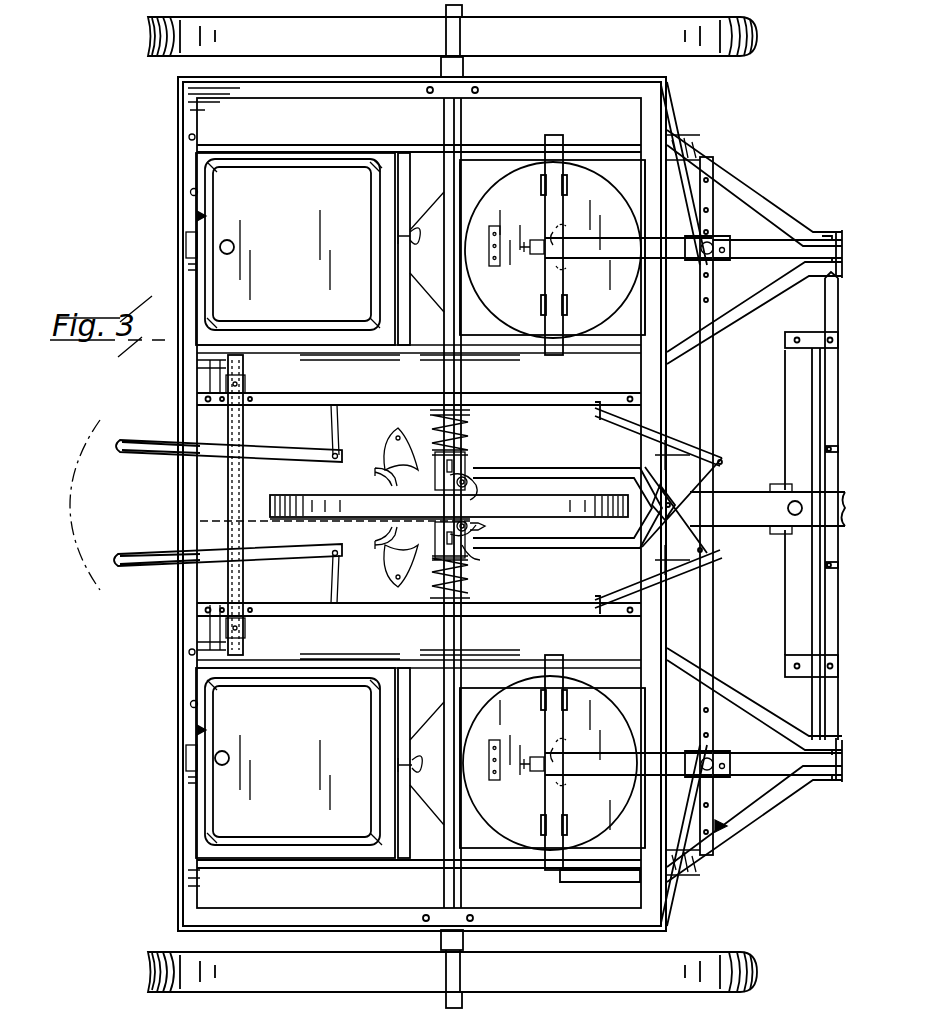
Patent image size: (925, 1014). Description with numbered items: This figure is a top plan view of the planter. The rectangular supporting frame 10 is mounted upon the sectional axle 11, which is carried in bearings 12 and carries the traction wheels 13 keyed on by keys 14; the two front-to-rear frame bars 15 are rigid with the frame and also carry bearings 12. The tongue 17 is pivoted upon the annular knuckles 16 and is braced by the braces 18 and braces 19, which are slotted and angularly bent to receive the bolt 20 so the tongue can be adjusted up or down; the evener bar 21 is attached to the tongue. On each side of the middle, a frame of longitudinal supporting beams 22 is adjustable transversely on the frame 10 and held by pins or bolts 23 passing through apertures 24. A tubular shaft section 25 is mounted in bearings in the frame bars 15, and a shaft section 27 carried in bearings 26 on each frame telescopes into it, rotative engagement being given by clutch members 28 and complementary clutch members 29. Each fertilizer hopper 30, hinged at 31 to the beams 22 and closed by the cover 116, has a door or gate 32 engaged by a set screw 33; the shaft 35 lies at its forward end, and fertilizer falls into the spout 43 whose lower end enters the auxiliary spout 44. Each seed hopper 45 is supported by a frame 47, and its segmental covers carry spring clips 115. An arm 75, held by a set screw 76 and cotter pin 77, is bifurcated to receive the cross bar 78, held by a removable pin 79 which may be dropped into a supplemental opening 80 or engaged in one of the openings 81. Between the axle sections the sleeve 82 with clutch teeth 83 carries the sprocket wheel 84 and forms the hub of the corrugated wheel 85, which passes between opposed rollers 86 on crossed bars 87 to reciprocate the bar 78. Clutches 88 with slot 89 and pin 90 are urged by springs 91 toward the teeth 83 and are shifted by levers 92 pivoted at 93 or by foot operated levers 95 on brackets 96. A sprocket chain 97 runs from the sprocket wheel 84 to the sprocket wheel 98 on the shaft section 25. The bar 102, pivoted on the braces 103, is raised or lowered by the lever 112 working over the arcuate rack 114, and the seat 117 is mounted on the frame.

The supporting frame 10 is at (178, 890).
The sectional axle 11 is at (461, 113).
The bearings 12 is at (414, 100).
The traction wheels 13 is at (160, 58).
The keys 14 is at (441, 62).
The frame bars 15 is at (538, 402).
The annular knuckles 16 is at (668, 458).
The tongue 17 is at (832, 505).
The braces 18 is at (680, 130).
The braces 19 is at (625, 432).
The bolt 20 is at (783, 486).
The evener bar 21 is at (798, 332).
The longitudinal supporting beams 22 is at (320, 144).
The pins or bolts 23 is at (190, 193).
The apertures 24 is at (188, 137).
The tubular shaft section 25 is at (243, 438).
The bearings 26 is at (250, 340).
The shaft section 27 is at (243, 382).
The clutch members 28 is at (247, 388).
The clutch members 29 is at (239, 508).
The fertilizer hopper 30 is at (197, 216).
The hinge 31 is at (186, 248).
The door or gate 32 is at (396, 208).
The set screw 33 is at (420, 222).
The shaft 35 is at (375, 163).
The spout 43 is at (425, 292).
The auxiliary spout 44 is at (483, 300).
The seed hopper 45 is at (490, 196).
The frame 47 is at (551, 137).
The arm 75 is at (620, 256).
The set screw 76 is at (538, 252).
The cotter pin 77 is at (562, 230).
The cross bar 78 is at (713, 163).
The removable pin 79 is at (714, 242).
The supplemental opening 80 is at (724, 254).
The openings 81 is at (730, 830).
The sleeve 82 is at (435, 488).
The clutch teeth 83 is at (435, 531).
The sprocket wheel 84 is at (490, 525).
The wheel 85 is at (280, 495).
The rollers 86 is at (480, 496).
The crossed bars 87 is at (563, 468).
The clutches 88 is at (470, 472).
The slot 89 is at (472, 548).
The pin 90 is at (475, 563).
The spring 91 is at (438, 408).
The levers 92 is at (303, 453).
The pivot 93 is at (336, 455).
The foot operated levers 95 is at (375, 476).
The bracket 96 is at (400, 426).
The sprocket chain 97 is at (290, 531).
The sprocket wheel 98 is at (205, 521).
The bar 102 is at (800, 248).
The braces 103 is at (770, 205).
The lever 112 is at (368, 356).
The arcuate rack 114 is at (596, 306).
The spring clip 115 is at (506, 222).
The cover 116 is at (245, 262).
The seat 117 is at (97, 442).